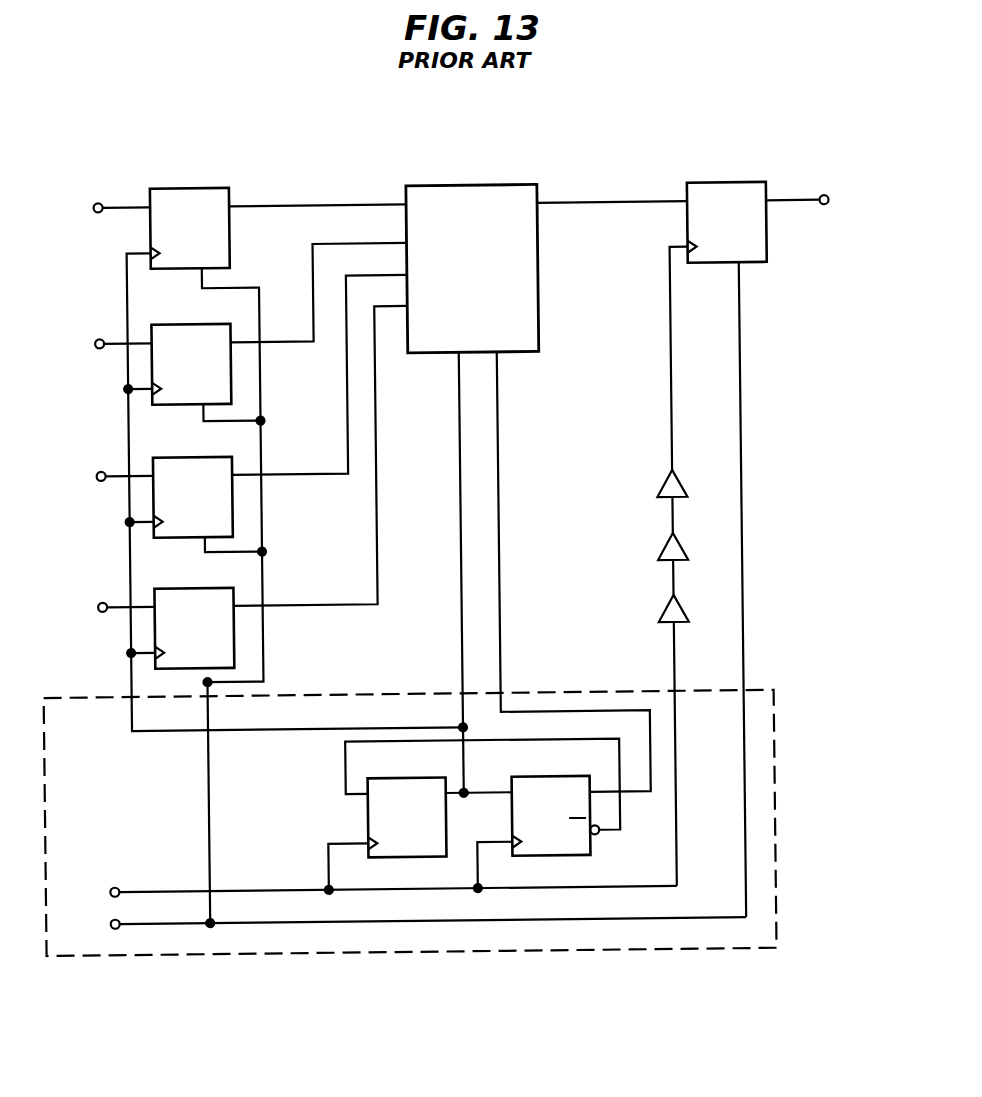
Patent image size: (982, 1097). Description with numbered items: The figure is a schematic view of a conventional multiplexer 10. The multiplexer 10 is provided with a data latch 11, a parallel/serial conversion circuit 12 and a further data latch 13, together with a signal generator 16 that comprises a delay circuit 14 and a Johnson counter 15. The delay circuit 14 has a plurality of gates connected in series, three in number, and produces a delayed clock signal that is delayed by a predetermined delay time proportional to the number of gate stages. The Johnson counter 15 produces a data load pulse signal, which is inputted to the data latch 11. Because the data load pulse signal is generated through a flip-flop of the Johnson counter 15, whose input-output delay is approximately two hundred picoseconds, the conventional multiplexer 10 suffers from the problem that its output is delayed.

The multiplexer 10 is at (325, 139).
The data latch 11 is at (230, 139).
The parallel/serial conversion circuit 12 is at (485, 187).
The data latch 13 is at (769, 186).
The delay circuit 14 is at (632, 451).
The Johnson counter 15 is at (651, 690).
The signal generator 16 is at (786, 518).